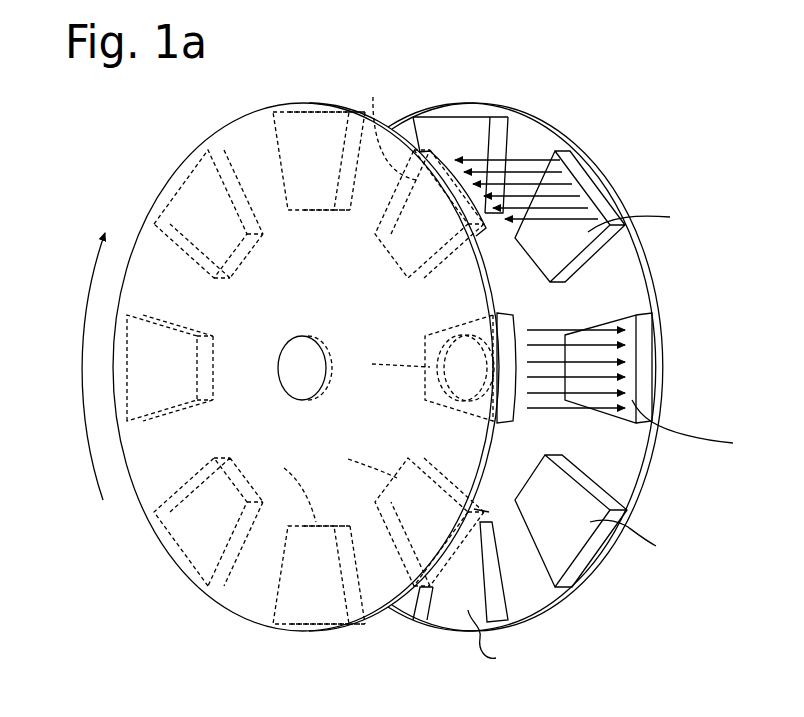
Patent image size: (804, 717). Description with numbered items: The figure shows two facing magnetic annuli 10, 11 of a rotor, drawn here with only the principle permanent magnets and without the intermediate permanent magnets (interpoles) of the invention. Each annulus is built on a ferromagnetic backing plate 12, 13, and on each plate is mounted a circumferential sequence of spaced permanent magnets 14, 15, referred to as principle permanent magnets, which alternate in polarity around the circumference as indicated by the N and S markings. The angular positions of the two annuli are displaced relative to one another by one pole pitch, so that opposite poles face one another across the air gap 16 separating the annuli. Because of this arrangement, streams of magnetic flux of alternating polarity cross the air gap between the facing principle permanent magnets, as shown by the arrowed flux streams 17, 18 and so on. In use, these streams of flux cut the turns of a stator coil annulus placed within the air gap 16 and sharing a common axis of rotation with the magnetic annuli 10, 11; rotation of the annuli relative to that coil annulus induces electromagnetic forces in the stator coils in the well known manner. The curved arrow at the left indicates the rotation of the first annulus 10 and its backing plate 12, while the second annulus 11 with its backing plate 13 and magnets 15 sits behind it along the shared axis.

The magnetic annulus 10 is at (277, 375).
The magnetic annulus 11 is at (569, 376).
The ferromagnetic backing plate 12 is at (388, 614).
The ferromagnetic backing plate 13 is at (574, 596).
The principle permanent magnet 14 is at (441, 155).
The principle permanent magnet 15 is at (651, 361).
The air gap 16 is at (505, 247).
The stream of magnetic flux 17 is at (521, 156).
The stream of magnetic flux 18 is at (552, 328).